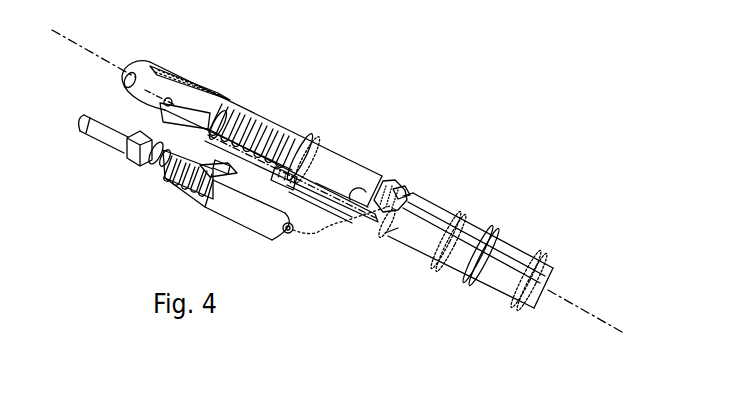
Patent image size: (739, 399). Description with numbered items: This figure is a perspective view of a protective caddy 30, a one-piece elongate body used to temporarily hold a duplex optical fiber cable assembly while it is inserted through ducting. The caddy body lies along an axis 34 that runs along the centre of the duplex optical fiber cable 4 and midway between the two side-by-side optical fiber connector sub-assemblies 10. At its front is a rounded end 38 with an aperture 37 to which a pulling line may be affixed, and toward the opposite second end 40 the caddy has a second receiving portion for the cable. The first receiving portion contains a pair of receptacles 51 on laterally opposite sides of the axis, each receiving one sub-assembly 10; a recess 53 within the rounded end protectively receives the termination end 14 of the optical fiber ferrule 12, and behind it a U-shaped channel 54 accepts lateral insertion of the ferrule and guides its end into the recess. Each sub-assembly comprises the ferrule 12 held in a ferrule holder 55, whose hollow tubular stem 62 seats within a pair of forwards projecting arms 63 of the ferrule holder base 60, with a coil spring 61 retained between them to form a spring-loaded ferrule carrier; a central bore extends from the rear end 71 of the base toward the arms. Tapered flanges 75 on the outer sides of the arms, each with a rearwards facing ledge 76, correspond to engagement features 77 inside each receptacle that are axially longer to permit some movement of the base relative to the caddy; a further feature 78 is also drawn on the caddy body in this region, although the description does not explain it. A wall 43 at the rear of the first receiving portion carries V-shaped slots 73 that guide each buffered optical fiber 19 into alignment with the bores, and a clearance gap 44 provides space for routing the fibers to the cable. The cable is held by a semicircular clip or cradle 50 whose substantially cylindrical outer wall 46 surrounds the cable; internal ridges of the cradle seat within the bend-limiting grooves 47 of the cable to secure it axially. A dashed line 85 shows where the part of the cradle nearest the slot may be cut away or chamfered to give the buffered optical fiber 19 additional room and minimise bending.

The duplex optical fiber cable 4 is at (517, 256).
The optical fiber connector sub-assembly 10 is at (184, 202).
The optical fiber ferrule 12 is at (120, 146).
The termination end 14 is at (73, 117).
The buffered optical fiber 19 is at (316, 232).
The protective caddy 30 is at (240, 100).
The axis 34 is at (583, 313).
The aperture 37 is at (130, 72).
The rounded end 38 is at (145, 62).
The second end 40 is at (488, 285).
The wall 43 is at (402, 186).
The clearance gap 44 is at (406, 192).
The outer wall 46 is at (437, 250).
The grooves 47 is at (457, 250).
The clip or cradle 50 is at (488, 228).
The receptacle 51 is at (312, 174).
The recess 53 is at (163, 104).
The U-shaped channel 54 is at (172, 107).
The ferrule holder 55 is at (138, 158).
The ferrule holder base 60 is at (253, 220).
The coil spring 61 is at (155, 175).
The tubular stem 62 is at (143, 181).
The forwards projecting arms 63 is at (193, 156).
The rear end 71 is at (287, 242).
The slot 73 is at (384, 184).
The tapered flanges 75 is at (222, 170).
The rearwards facing ledge 76 is at (229, 174).
The engagement features 77 is at (296, 136).
The block 78 is at (297, 189).
The dashed line 85 is at (388, 222).